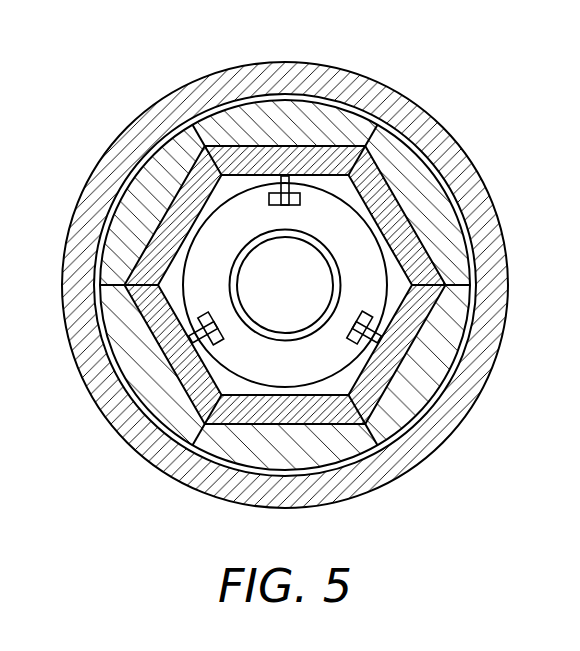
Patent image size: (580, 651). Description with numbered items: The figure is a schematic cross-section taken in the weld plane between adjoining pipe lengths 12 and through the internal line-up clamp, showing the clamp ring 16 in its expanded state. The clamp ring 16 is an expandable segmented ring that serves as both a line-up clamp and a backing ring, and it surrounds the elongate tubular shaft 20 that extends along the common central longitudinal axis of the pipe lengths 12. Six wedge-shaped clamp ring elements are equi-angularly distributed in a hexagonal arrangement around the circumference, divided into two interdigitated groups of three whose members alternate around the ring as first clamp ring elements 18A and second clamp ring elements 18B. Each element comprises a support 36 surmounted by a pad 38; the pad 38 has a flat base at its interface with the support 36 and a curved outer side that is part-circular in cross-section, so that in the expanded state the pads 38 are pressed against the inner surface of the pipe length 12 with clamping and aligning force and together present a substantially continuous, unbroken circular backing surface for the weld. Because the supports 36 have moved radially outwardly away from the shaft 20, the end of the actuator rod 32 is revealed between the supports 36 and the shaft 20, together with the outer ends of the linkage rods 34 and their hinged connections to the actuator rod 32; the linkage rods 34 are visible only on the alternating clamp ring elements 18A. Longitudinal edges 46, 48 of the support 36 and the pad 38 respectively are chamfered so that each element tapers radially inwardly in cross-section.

The pipe length 12 is at (356, 78).
The clamp ring 16 is at (484, 215).
The clamp ring element 18A is at (283, 118).
The clamp ring element 18B is at (438, 198).
The shaft 20 is at (252, 250).
The actuator rod 32 is at (253, 375).
The linkage rod 34 is at (288, 198).
The support 36 is at (375, 182).
The pad 38 is at (225, 127).
The longitudinal edge 46 is at (472, 278).
The longitudinal edge 48 is at (195, 137).